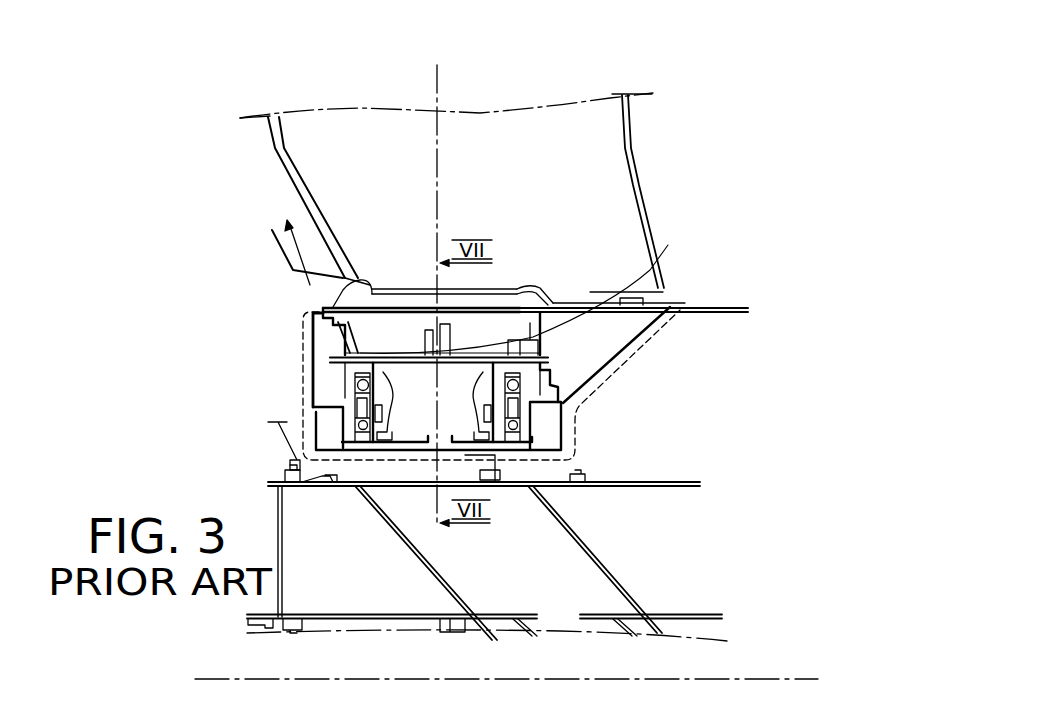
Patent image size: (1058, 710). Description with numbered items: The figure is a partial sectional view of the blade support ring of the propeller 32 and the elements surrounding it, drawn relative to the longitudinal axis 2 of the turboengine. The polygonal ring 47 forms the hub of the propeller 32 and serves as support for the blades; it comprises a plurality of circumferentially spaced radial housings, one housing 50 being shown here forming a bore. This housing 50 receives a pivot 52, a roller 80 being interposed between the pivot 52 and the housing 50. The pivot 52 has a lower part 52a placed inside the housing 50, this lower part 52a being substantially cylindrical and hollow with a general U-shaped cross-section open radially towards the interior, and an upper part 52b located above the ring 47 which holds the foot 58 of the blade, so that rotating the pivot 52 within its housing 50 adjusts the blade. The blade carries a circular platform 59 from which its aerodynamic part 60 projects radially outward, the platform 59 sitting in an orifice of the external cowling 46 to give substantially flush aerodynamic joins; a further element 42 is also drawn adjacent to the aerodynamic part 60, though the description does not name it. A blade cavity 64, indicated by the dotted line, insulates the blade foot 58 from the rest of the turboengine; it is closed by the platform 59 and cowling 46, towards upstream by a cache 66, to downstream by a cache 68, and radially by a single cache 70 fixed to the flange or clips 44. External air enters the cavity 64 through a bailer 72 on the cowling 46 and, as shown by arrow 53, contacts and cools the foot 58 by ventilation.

The longitudinal axis 2 is at (778, 678).
The propeller 32 is at (519, 180).
The seat strut 42 is at (612, 207).
The flange or clips 44 is at (627, 592).
The external cowling 46 is at (718, 308).
The polygonal ring 47 is at (317, 405).
The housing 50 is at (362, 425).
The pivot 52 is at (350, 360).
The lower part of the pivot 52a is at (392, 398).
The upper part of the pivot 52b is at (523, 333).
The arrow 53 is at (297, 235).
The blade foot 58 is at (400, 347).
The platform 59 is at (400, 282).
The aerodynamic part 60 is at (580, 108).
The blade cavity 64 is at (617, 370).
The cache 66 is at (345, 392).
The cache 68 is at (633, 345).
The cache 70 is at (418, 462).
The bailer 72 is at (637, 303).
The roller 80 is at (517, 386).